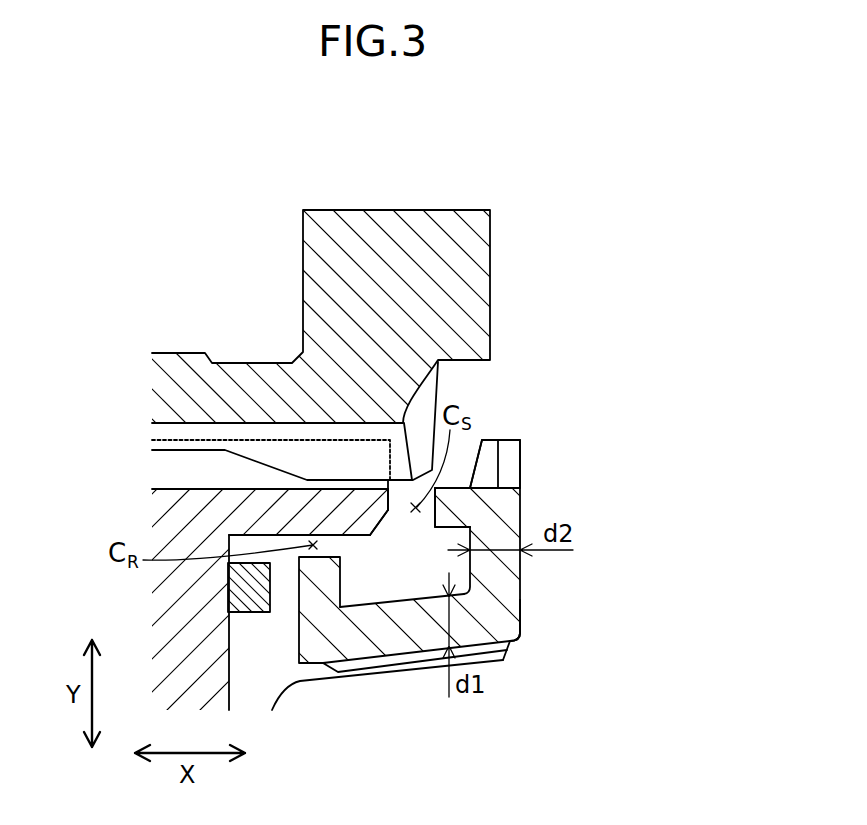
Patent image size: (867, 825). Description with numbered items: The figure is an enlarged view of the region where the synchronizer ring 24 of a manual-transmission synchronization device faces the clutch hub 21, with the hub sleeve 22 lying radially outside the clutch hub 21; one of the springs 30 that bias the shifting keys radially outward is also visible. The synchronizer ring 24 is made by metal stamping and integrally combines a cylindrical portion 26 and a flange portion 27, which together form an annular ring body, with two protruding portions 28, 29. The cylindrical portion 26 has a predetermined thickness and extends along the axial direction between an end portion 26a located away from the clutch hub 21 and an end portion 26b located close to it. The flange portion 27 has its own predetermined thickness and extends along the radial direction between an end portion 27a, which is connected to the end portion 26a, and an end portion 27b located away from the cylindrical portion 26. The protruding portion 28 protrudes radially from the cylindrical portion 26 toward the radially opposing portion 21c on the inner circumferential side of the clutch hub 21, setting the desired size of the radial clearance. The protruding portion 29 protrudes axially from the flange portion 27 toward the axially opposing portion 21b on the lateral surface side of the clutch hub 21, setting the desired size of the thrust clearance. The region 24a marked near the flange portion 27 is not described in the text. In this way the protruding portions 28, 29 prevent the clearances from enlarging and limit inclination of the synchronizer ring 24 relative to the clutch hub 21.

The clutch hub 21 is at (145, 510).
The axially opposing portion 21b is at (393, 498).
The radially opposing portion 21c is at (340, 535).
The hub sleeve 22 is at (291, 247).
The synchronizer ring 24 is at (533, 637).
The fitting portion of seal member 24a is at (508, 463).
The cylindrical portion 26 is at (383, 640).
The end portion 26a is at (500, 617).
The end portion 26b is at (298, 683).
The flange portion 27 is at (518, 573).
The end portion 27a is at (515, 620).
The end portion 27b is at (507, 505).
The protruding portion 28 is at (310, 578).
The protruding portion 29 is at (448, 497).
The spring 30 is at (248, 615).